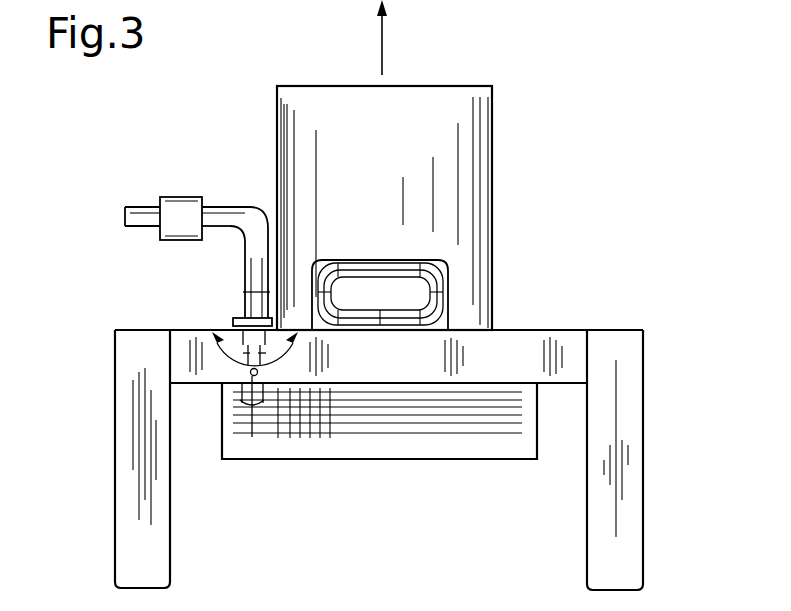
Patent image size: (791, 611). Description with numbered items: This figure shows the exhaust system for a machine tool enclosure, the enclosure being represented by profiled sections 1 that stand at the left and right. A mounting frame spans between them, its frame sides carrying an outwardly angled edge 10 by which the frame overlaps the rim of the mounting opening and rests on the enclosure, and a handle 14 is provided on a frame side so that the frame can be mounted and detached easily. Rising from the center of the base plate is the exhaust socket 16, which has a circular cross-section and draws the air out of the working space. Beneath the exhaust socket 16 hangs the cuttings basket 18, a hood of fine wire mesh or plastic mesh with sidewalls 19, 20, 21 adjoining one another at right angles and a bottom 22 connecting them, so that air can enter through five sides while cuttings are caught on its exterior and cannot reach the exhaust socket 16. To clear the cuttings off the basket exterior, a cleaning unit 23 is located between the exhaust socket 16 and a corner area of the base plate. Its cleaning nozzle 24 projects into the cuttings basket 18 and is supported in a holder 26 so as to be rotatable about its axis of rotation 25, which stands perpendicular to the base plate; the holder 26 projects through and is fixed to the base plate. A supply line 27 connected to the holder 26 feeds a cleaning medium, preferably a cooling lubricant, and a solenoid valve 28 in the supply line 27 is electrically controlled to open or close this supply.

The profiled sections 1 is at (128, 575).
The angled edge 10 is at (520, 330).
The handle 14 is at (337, 262).
The exhaust socket 16 is at (447, 100).
The cuttings basket 18 is at (252, 440).
The sidewall 19 is at (418, 445).
The sidewall 20 is at (222, 423).
The sidewall 21 is at (537, 418).
The bottom 22 is at (372, 460).
The cleaning unit 23 is at (235, 322).
The cleaning nozzle 24 is at (237, 378).
The axis of rotation 25 is at (247, 440).
The holder 26 is at (260, 206).
The supply line 27 is at (230, 218).
The solenoid valve 28 is at (180, 208).